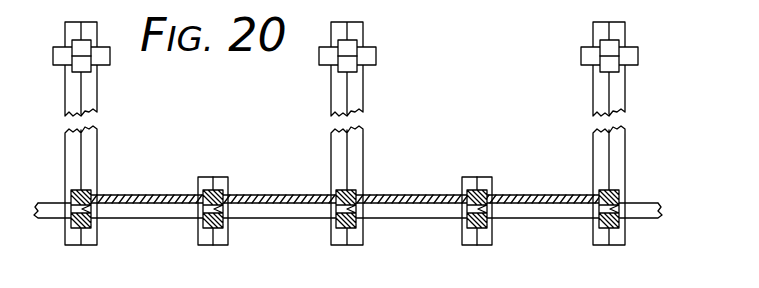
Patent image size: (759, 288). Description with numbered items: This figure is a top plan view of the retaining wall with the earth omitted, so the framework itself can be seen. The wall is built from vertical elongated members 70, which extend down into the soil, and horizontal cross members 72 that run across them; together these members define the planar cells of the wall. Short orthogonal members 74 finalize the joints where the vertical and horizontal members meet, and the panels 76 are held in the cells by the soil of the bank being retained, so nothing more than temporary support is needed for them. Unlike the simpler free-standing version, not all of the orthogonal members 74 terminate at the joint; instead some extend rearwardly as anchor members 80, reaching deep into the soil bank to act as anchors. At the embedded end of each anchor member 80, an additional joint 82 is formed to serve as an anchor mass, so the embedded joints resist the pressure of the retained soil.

The vertical elongated member 70 is at (490, 226).
The horizontal cross member 72 is at (140, 218).
The short member 74 is at (224, 178).
The panel 76 is at (403, 203).
The rearwardly extending anchor member 80 is at (624, 104).
The additional joint 82 is at (638, 57).